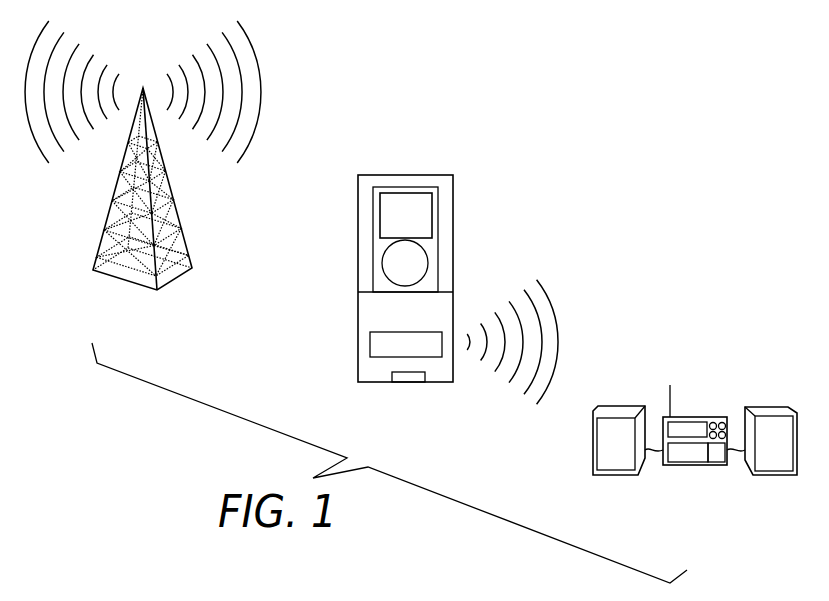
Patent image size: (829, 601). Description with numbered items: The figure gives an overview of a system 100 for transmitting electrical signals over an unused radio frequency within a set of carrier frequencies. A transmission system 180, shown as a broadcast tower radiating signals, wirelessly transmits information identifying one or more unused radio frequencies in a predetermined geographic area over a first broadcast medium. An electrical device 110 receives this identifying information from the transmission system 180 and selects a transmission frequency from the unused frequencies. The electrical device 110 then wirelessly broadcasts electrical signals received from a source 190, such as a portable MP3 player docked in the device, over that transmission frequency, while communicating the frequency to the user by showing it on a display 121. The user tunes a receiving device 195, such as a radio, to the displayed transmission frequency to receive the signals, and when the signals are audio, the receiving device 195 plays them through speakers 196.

The system 100 is at (660, 178).
The electrical device 110 is at (367, 359).
The display 121 is at (370, 343).
The transmission system 180 is at (183, 232).
The source 190 is at (438, 246).
The receiving device 195 is at (695, 467).
The speakers 196 is at (612, 478).